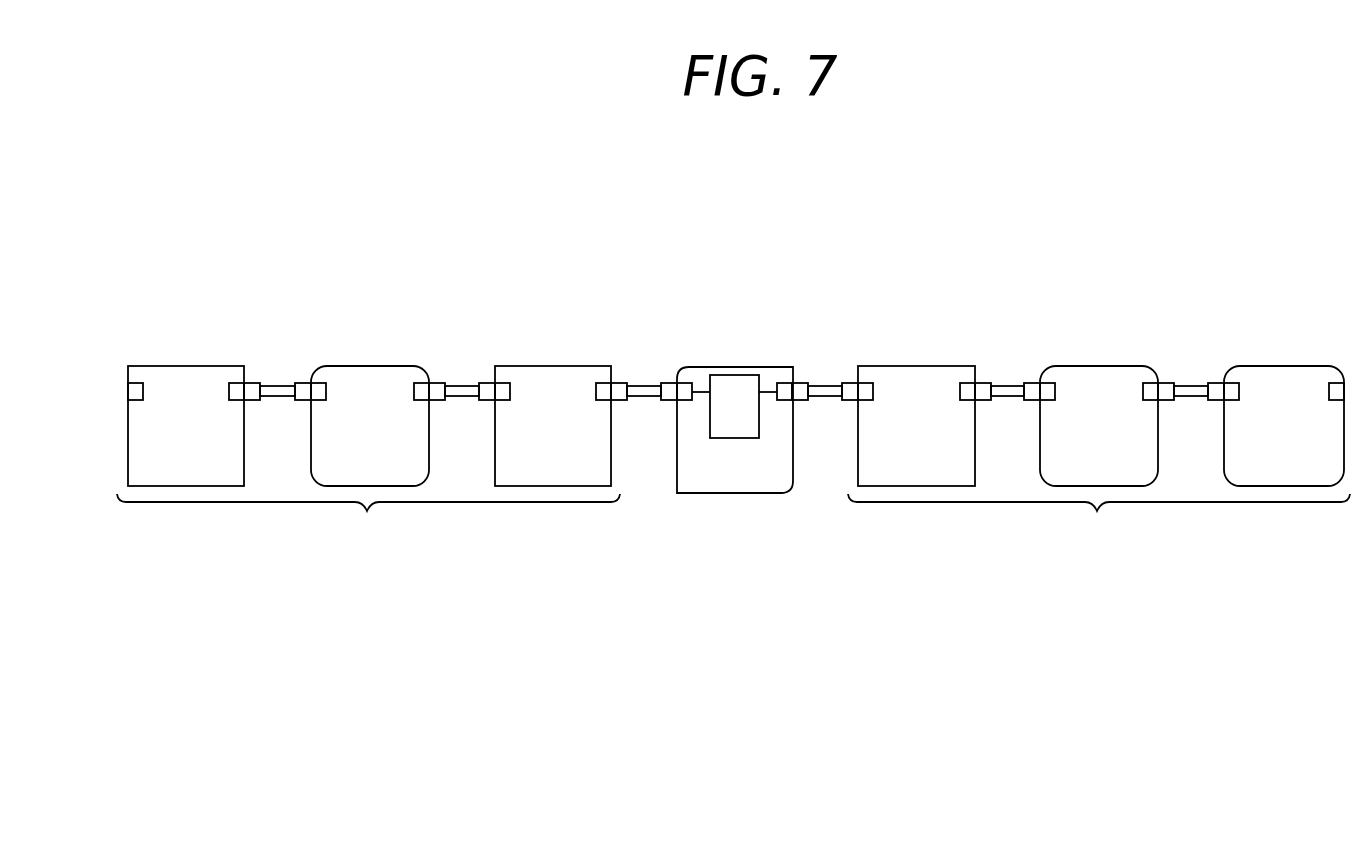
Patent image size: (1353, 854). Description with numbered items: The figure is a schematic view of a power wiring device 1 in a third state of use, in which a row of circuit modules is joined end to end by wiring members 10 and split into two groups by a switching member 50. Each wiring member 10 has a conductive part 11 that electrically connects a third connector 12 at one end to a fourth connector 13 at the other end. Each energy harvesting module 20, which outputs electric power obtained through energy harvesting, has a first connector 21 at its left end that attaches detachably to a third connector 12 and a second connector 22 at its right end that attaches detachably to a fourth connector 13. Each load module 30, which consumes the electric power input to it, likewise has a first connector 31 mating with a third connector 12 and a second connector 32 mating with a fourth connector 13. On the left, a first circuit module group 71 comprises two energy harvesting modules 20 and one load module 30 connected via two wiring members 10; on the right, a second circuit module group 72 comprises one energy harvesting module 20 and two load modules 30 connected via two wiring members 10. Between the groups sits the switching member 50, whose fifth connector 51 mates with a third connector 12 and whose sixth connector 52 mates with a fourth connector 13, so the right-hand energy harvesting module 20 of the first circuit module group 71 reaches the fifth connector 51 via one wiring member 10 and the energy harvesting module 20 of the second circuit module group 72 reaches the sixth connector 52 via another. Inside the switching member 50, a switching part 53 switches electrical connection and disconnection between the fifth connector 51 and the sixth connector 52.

The power wiring device 1 is at (1213, 161).
The wiring member 10 is at (734, 391).
The conductive part 11 is at (268, 396).
The third connector 12 is at (303, 400).
The fourth connector 13 is at (252, 400).
The energy harvesting module 20 is at (185, 365).
The first connector 21 is at (135, 401).
The second connector 22 is at (238, 401).
The load module 30 is at (382, 365).
The first connector 31 is at (318, 401).
The second connector 32 is at (421, 401).
The switching member 50 is at (734, 365).
The fifth connector 51 is at (684, 401).
The sixth connector 52 is at (786, 401).
The switching part 53 is at (732, 438).
The first circuit module group 71 is at (368, 519).
The second circuit module group 72 is at (1099, 519).